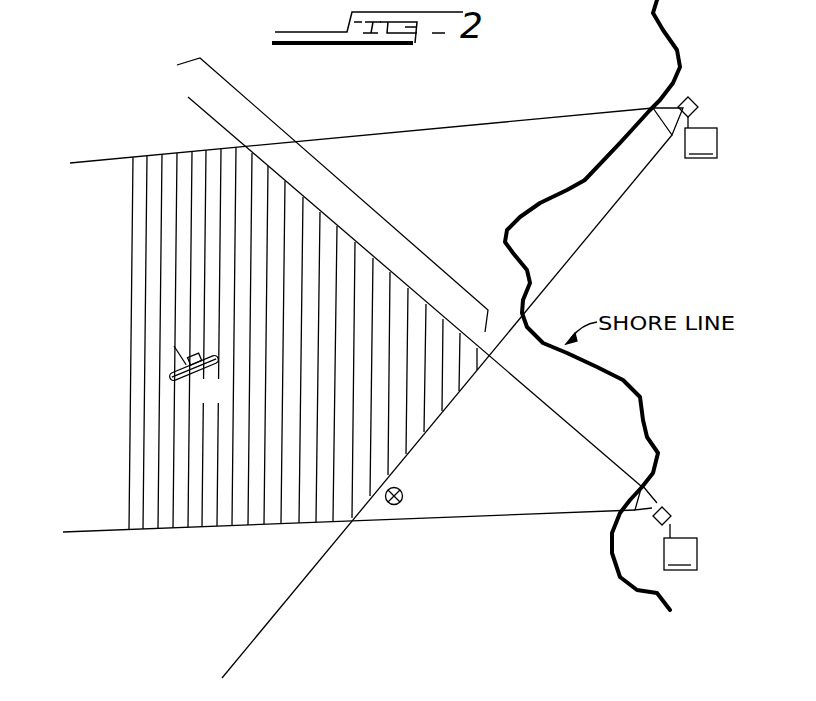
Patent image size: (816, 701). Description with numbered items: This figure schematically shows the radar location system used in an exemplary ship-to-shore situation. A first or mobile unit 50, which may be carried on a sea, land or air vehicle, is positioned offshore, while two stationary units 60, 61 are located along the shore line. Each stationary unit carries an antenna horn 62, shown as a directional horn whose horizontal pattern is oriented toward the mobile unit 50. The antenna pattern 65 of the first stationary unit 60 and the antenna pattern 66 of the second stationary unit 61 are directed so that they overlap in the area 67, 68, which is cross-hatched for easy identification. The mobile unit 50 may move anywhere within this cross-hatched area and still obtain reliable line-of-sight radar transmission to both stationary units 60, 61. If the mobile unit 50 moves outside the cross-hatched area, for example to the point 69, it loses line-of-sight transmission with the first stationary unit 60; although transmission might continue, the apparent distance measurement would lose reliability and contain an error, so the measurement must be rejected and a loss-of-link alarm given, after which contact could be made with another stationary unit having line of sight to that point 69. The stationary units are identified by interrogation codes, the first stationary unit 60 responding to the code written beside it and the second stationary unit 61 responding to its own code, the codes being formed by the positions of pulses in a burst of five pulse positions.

The mobile unit 50 is at (229, 399).
The first stationary unit 60 is at (691, 147).
The second stationary unit 61 is at (681, 541).
The antenna horn 62 is at (698, 102).
The antenna pattern of first stationary unit 65 is at (620, 198).
The antenna pattern of second stationary unit 66 is at (580, 498).
The overlap area 67 is at (65, 152).
The overlap area 68 is at (344, 186).
The point outside cross-hatched area 69 is at (403, 493).